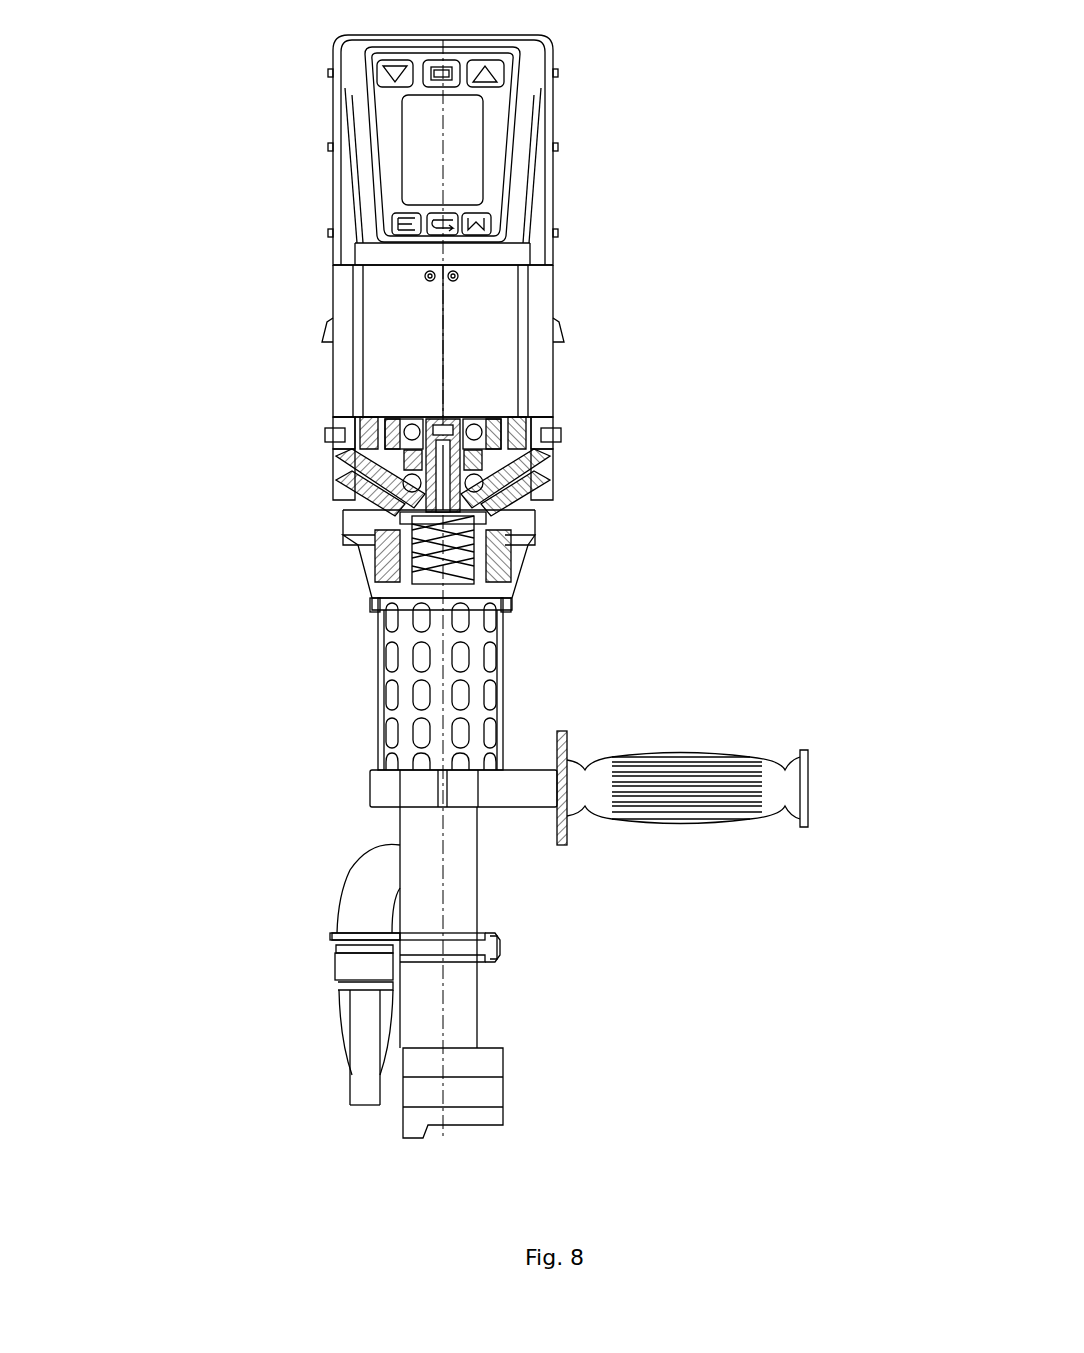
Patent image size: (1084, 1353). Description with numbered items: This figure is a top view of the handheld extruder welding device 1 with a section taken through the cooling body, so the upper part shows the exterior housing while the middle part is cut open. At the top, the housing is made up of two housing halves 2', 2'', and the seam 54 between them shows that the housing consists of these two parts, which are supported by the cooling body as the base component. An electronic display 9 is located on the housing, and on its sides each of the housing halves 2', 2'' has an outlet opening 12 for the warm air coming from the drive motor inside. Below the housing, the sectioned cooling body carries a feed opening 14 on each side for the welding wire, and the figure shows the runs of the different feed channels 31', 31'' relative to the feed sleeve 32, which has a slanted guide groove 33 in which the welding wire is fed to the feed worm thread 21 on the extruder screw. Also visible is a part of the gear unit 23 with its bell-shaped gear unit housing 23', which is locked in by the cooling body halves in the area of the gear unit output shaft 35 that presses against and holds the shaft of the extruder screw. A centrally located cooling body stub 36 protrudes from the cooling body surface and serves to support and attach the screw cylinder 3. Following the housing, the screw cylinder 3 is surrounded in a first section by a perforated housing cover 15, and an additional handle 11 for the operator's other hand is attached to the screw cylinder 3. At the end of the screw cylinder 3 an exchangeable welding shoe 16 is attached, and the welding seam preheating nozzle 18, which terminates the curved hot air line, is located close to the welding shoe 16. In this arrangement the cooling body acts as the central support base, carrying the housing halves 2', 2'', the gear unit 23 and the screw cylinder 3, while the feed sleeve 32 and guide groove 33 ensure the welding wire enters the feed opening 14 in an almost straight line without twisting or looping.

The handheld extruder welding device 1 is at (633, 143).
The electronic display 9 is at (387, 118).
The first housing half 2' is at (282, 327).
The second housing half 2'' is at (604, 326).
The outlet opening 12 is at (330, 338).
The seam 54 is at (443, 313).
The gear unit 23 is at (292, 410).
The bell-shaped gear unit housing 23' is at (601, 409).
The feed opening 14 is at (336, 462).
The gear unit output shaft 35 is at (426, 473).
The first feed channel 31' is at (290, 482).
The second feed channel 31'' is at (604, 482).
The feed worm thread 21 is at (356, 548).
The cooling body stub 36 is at (530, 530).
The feed sleeve 32 is at (360, 578).
The guide groove 33 is at (540, 568).
The perforated housing cover 15 is at (378, 675).
The additional handle 11 is at (808, 790).
The screw cylinder 3 is at (470, 916).
The welding seam preheating nozzle 18 is at (357, 1040).
The welding shoe 16 is at (497, 1090).